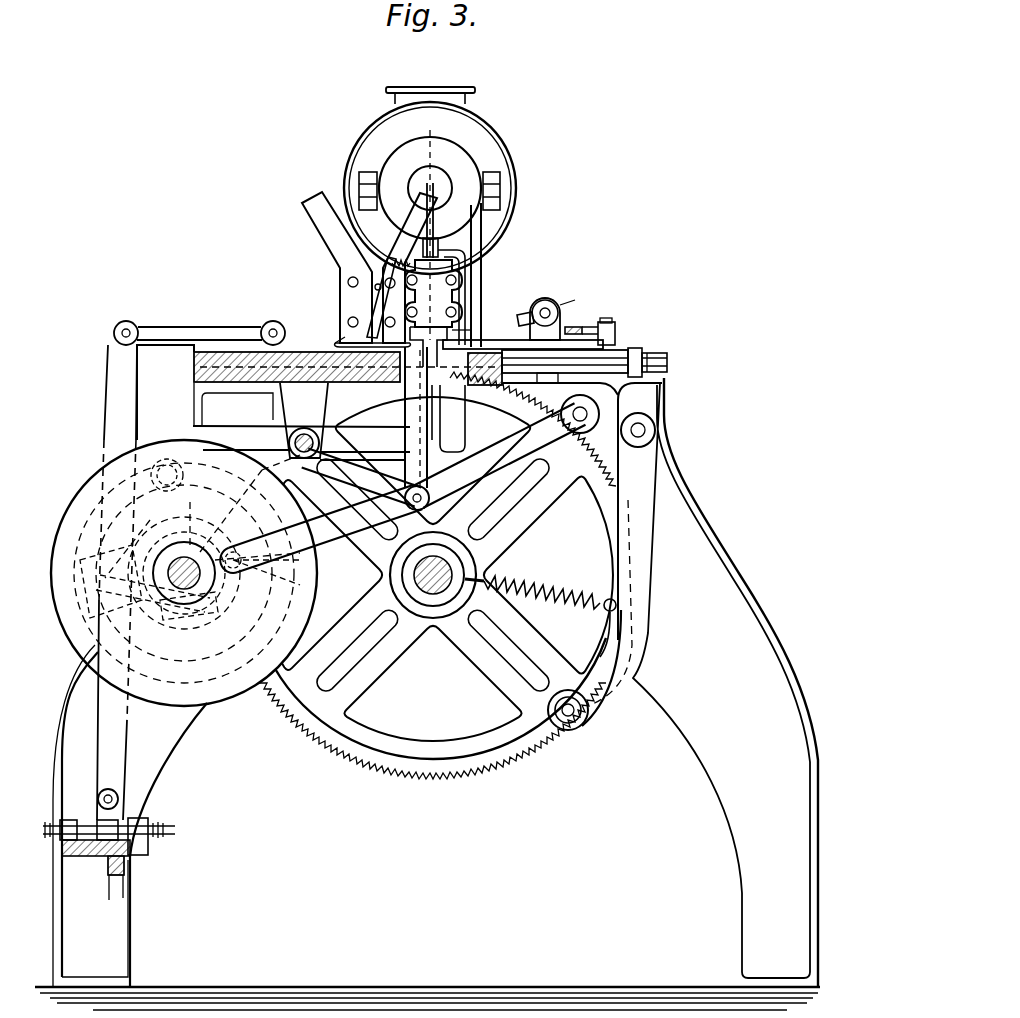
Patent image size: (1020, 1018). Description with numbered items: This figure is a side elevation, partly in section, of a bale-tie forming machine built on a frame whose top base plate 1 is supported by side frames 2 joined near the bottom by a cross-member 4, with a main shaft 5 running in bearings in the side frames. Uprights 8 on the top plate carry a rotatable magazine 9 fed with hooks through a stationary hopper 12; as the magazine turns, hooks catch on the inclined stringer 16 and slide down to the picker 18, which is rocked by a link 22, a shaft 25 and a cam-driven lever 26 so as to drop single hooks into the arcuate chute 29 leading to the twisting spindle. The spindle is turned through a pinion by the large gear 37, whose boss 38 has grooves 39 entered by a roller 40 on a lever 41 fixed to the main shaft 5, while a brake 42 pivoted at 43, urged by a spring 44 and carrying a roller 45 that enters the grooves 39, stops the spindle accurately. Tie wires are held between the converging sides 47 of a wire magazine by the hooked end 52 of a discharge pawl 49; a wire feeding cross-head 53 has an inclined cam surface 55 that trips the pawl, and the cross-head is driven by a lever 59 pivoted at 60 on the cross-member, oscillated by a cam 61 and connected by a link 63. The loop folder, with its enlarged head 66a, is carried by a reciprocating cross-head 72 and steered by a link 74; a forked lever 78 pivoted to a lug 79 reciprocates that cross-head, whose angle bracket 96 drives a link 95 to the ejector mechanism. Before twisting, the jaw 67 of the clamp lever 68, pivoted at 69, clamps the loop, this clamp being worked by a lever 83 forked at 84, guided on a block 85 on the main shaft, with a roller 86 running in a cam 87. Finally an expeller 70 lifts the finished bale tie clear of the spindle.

The top base plate 1 is at (194, 364).
The side frame 2 is at (125, 944).
The cross-member 4 is at (133, 860).
The main shaft 5 is at (185, 555).
The upright 8 is at (483, 236).
The magazine 9 is at (496, 146).
The stationary hopper 12 is at (457, 87).
The inclined stringer 16 is at (440, 177).
The picker 18 is at (445, 248).
The link 22 is at (462, 292).
The shaft 25 is at (303, 428).
The lever 26 is at (236, 427).
The arcuate chute 29 is at (467, 268).
The large gear 37 is at (415, 782).
The boss 38 is at (428, 597).
The grooves 39 is at (325, 500).
The roller 40 is at (262, 470).
The lever 41 is at (242, 468).
The brake 42 is at (620, 690).
The pivot 43 is at (656, 430).
The spring 44 is at (552, 593).
The roller 45 is at (582, 728).
The sides 47 is at (328, 188).
The discharge pawl 49 is at (370, 295).
The hooked end 52 is at (370, 327).
The wire feeding cross-head 53 is at (305, 343).
The inclined cam surface 55 is at (345, 337).
The lever 59 is at (107, 410).
The pivot 60 is at (118, 797).
The cam 61 is at (184, 573).
The link 63 is at (177, 326).
The enlarged head 66a is at (520, 318).
The jaw 67 is at (445, 326).
The clamp lever 68 is at (404, 420).
The pivot 69 is at (462, 346).
The expeller 70 is at (442, 427).
The cross-head 72 is at (620, 358).
The link 74 is at (573, 325).
The lever 78 is at (548, 440).
The lug 79 is at (600, 393).
The lever 83 is at (341, 540).
The fork 84 is at (105, 555).
The block 85 is at (196, 604).
The roller 86 is at (252, 570).
The cam 87 is at (78, 646).
The link 95 is at (548, 300).
The angle bracket 96 is at (560, 305).